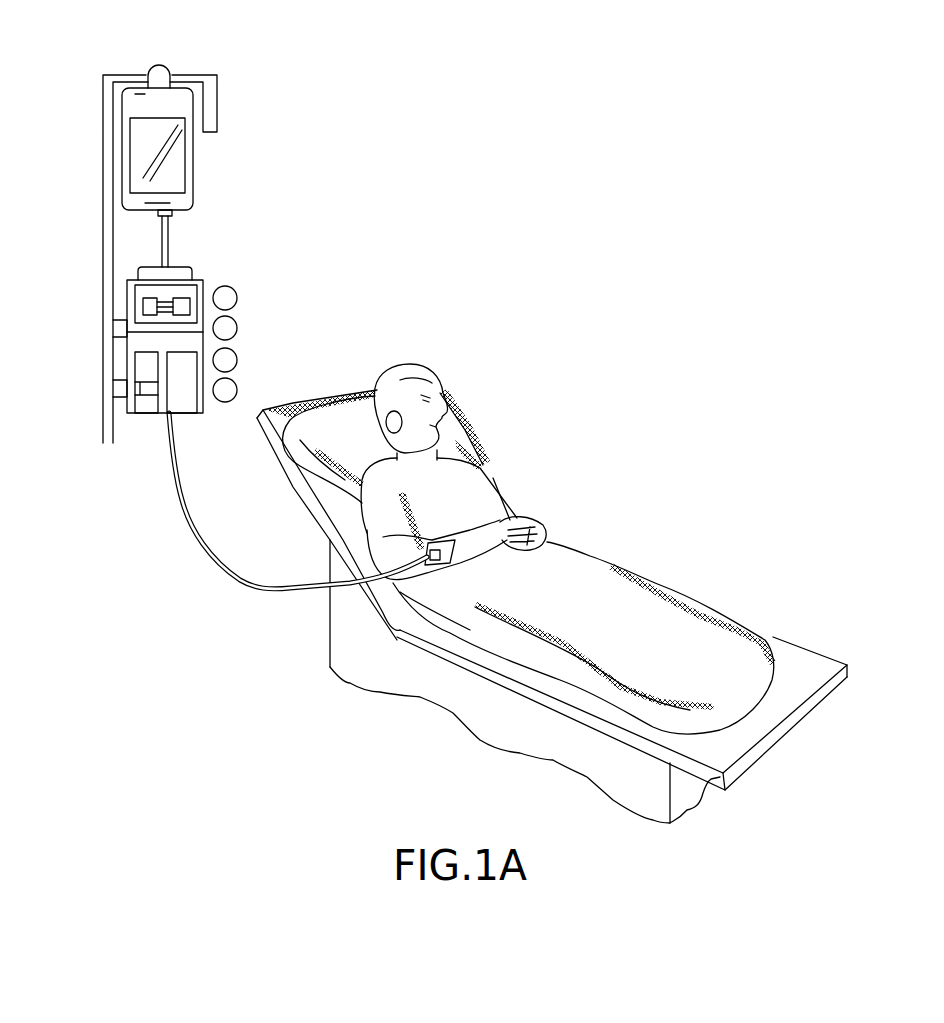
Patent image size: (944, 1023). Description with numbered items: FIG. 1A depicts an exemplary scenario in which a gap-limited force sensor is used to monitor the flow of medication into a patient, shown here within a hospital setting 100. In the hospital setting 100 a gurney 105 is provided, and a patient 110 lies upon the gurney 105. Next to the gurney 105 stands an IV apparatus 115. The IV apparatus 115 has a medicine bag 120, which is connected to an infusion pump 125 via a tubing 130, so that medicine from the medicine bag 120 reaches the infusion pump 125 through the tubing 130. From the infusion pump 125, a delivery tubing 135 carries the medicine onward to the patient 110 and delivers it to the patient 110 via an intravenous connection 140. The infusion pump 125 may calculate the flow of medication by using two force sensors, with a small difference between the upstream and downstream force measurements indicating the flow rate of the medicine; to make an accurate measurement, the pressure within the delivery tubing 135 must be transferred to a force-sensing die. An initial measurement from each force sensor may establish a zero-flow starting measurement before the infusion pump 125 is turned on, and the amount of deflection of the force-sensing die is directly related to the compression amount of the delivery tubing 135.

The hospital setting 100 is at (694, 550).
The gurney 105 is at (742, 613).
The patient 110 is at (484, 470).
The IV apparatus 115 is at (221, 200).
The medicine bag 120 is at (182, 100).
The infusion pump 125 is at (137, 348).
The tubing 130 is at (170, 250).
The delivery tubing 135 is at (180, 500).
The intravenous connection 140 is at (440, 540).